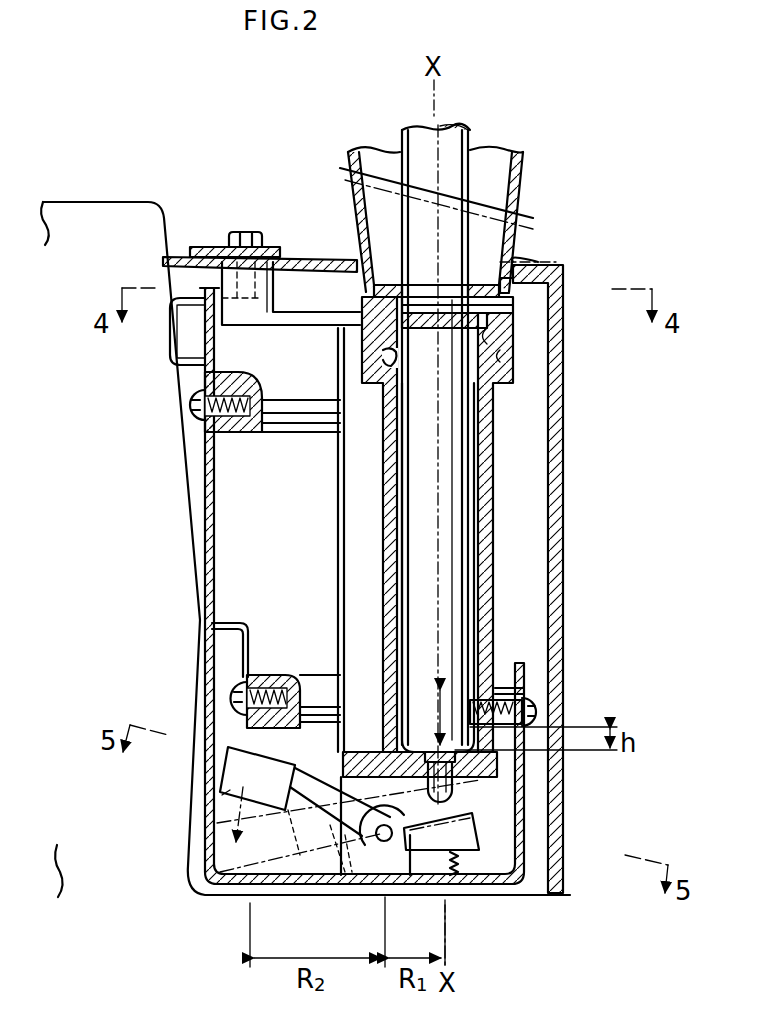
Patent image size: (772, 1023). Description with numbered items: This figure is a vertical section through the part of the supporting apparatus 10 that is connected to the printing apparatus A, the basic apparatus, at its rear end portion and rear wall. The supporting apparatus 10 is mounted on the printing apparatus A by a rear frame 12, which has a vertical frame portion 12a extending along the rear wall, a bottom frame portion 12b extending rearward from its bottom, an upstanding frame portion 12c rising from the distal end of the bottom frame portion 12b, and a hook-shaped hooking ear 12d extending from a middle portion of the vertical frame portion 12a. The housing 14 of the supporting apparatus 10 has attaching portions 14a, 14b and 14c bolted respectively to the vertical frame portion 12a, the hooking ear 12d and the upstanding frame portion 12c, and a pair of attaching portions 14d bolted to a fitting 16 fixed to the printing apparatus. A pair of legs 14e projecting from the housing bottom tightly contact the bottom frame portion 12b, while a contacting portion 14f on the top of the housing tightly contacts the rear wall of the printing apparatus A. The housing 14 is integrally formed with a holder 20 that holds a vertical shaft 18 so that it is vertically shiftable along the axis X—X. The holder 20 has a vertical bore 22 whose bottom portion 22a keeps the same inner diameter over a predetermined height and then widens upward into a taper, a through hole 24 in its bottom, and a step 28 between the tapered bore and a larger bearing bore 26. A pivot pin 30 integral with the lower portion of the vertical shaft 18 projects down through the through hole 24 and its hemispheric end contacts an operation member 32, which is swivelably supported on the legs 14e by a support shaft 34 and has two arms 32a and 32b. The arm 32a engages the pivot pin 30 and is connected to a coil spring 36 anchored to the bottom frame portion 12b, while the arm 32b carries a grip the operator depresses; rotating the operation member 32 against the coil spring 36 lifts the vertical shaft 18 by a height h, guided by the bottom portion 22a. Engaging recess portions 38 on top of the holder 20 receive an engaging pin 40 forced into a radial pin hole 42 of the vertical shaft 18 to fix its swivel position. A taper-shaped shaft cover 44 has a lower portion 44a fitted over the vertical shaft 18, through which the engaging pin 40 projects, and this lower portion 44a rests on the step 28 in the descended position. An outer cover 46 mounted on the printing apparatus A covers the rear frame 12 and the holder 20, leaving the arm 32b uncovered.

The printing apparatus A is at (121, 202).
The supporting apparatus 10 is at (551, 440).
The rear frame 12 is at (216, 548).
The vertical frame portion 12a is at (210, 496).
The bottom frame portion 12b is at (320, 886).
The upstanding frame portion 12c is at (526, 776).
The hooking ear 12d is at (246, 644).
The housing 14 is at (339, 580).
The attaching portion 14a is at (248, 426).
The attaching portion 14b is at (286, 683).
The attaching portion 14c is at (504, 690).
The attaching portions 14d is at (276, 288).
The legs 14e is at (392, 860).
The contacting portion 14f is at (183, 352).
The fitting 16 is at (212, 252).
The vertical shaft 18 is at (466, 572).
The holder 20 is at (480, 530).
The vertical bore 22 is at (494, 456).
The bottom portion 22a is at (517, 700).
The through hole 24 is at (432, 770).
The bearing bore 26 is at (492, 346).
The step 28 is at (396, 356).
The pivot pin 30 is at (456, 790).
The operation member 32 is at (305, 880).
The arm 32a is at (470, 830).
The arm 32b is at (233, 789).
The support shaft 34 is at (384, 842).
The coil spring 36 is at (458, 862).
The engaging recess portions 38 is at (494, 306).
The engaging pin 40 is at (522, 280).
The pin hole 42 is at (421, 285).
The shaft cover 44 is at (520, 190).
The lower portion 44a is at (494, 331).
The outer cover 46 is at (560, 626).